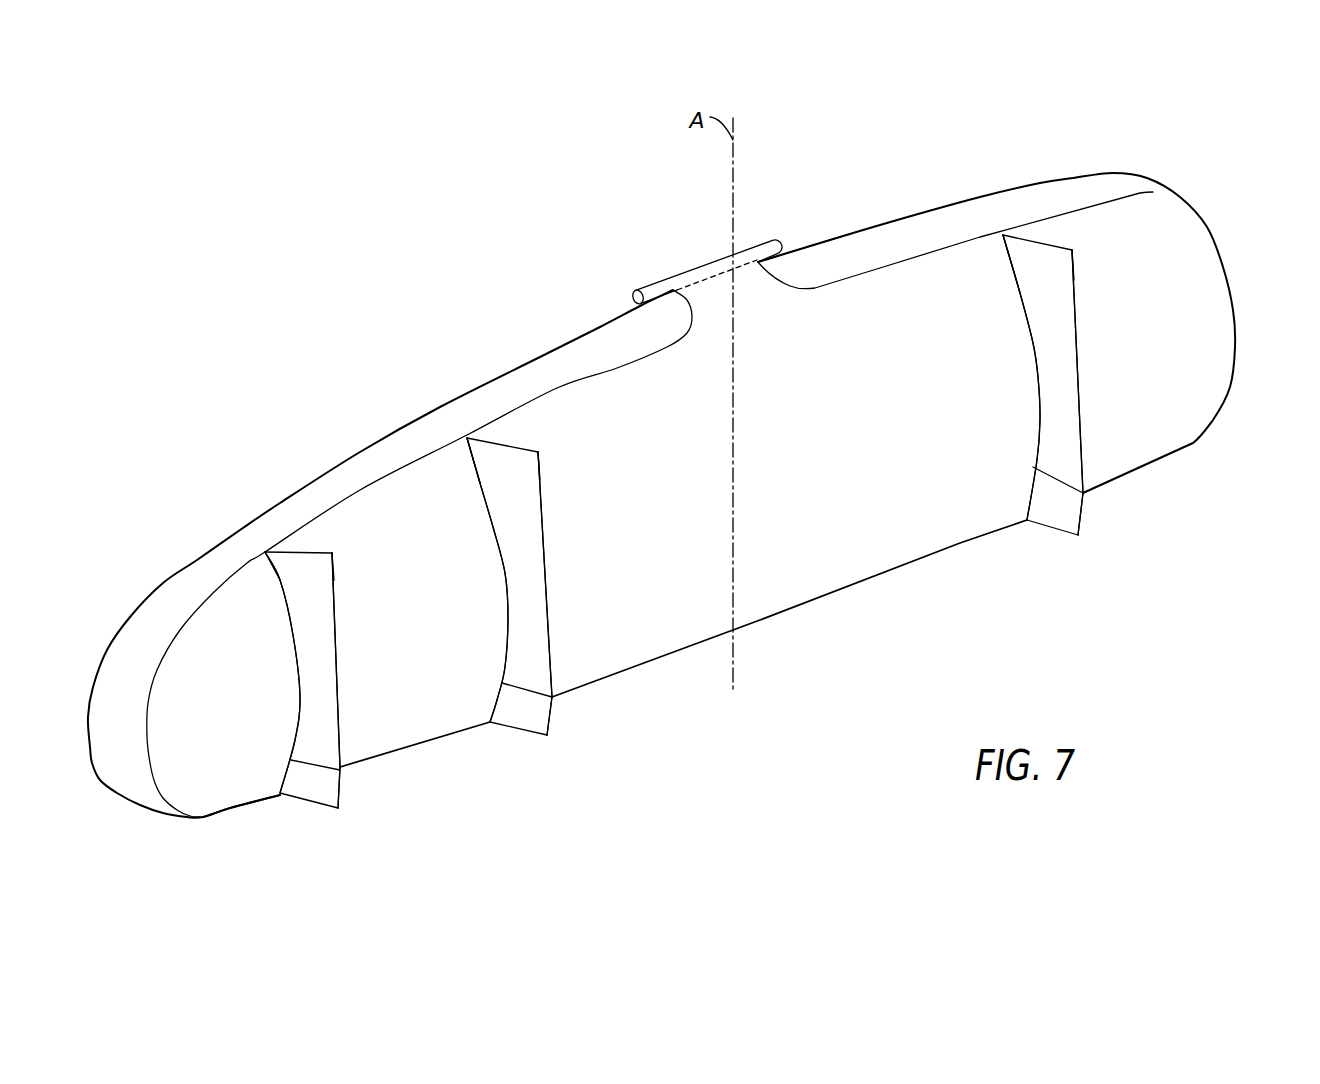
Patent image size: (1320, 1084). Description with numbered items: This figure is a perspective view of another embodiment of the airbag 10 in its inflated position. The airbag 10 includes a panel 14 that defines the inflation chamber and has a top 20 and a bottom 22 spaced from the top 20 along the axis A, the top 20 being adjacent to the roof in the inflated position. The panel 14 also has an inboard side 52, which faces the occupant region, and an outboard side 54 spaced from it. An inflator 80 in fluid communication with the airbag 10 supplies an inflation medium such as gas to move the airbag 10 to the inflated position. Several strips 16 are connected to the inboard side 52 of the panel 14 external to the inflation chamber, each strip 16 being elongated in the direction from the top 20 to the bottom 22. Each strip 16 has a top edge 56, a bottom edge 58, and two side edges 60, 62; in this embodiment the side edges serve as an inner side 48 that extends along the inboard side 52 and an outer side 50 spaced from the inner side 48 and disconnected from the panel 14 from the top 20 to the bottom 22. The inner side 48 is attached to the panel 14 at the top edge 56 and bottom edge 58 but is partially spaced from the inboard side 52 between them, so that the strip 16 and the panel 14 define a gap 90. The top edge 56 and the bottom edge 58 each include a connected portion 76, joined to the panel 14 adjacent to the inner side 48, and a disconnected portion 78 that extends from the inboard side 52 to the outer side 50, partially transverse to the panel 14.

The airbag 10 is at (132, 357).
The panel 14 is at (1187, 340).
The strip 16 is at (650, 509).
The top 20 is at (175, 602).
The bottom 22 is at (203, 817).
The inner side 48 is at (293, 635).
The outer side 50 is at (342, 682).
The inboard side 52 is at (903, 261).
The outboard side 54 is at (847, 235).
The top edge 56 is at (287, 547).
The bottom edge 58 is at (298, 810).
The side edge 60 is at (300, 677).
The side edge 62 is at (342, 718).
The connected portion 76 is at (265, 552).
The disconnected portion 78 is at (332, 553).
The inflator 80 is at (698, 262).
The gap 90 is at (340, 770).